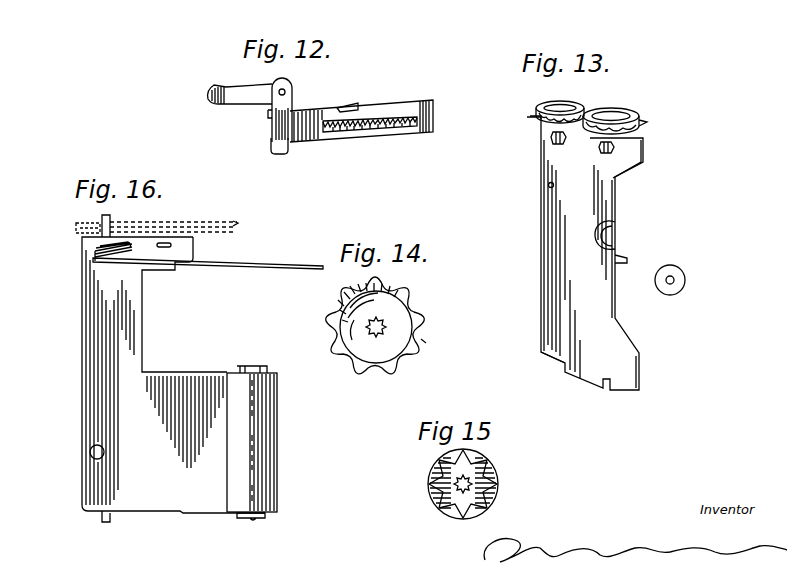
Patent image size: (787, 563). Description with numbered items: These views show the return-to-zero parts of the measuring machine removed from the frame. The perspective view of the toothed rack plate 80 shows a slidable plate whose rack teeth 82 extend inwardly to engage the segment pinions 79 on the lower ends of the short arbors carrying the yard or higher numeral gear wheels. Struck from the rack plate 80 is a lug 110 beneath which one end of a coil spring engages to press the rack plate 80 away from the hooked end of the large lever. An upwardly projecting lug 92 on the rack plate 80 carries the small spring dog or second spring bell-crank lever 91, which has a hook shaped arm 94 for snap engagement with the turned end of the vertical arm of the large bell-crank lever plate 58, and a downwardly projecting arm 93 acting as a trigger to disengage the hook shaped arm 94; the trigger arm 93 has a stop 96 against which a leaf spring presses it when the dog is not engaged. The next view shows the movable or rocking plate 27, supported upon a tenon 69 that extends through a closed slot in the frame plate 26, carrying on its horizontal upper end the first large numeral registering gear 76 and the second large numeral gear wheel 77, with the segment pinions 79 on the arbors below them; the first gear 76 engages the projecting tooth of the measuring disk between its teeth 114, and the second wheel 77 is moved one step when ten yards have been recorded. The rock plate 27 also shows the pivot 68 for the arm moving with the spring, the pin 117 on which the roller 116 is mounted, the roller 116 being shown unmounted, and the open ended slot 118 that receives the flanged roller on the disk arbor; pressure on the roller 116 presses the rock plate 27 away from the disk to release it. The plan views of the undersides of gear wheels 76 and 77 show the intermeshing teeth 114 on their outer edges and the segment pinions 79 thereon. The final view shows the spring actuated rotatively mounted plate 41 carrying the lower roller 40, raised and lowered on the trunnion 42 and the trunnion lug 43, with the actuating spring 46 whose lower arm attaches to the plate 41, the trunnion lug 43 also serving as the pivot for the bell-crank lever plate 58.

In FIG. 12, the toothed rack plate 80 is at (425, 134).
In FIG. 12, the rack teeth 82 is at (349, 133).
In FIG. 12, the lug 110 is at (347, 106).
In FIG. 12, the upwardly projecting lug 92 is at (292, 96).
In FIG. 12, the downwardly projecting arm 93 is at (273, 155).
In FIG. 12, the spring dog or second spring bell-crank lever 91 is at (233, 105).
In FIG. 12, the hook shaped arm 94 is at (210, 88).
In FIG. 12, the stop 96 is at (268, 116).
In FIG. 13, the movable or rocking plate 27 is at (541, 282).
In FIG. 13, the tenon 69 is at (565, 368).
In FIG. 13, the second large numeral gear wheel 77 is at (549, 102).
In FIG. 15, the second large numeral gear wheel 77 is at (492, 467).
In FIG. 13, the first large numeral registering gear 76 is at (634, 110).
In FIG. 14, the first large numeral registering gear 76 is at (398, 327).
In FIG. 13, the teeth 114 is at (646, 125).
In FIG. 14, the teeth 114 is at (418, 341).
In FIG. 13, the segment pinions 79 is at (591, 156).
In FIG. 14, the segment pinions 79 is at (380, 340).
In FIG. 15, the segment pinions 79 is at (474, 485).
In FIG. 13, the pivot 68 is at (547, 186).
In FIG. 13, the open ended slot 118 is at (612, 235).
In FIG. 13, the pin 117 is at (626, 260).
In FIG. 13, the roller 116 is at (684, 273).
In FIG. 16, the spring actuated rotatively mounted plate 41 is at (178, 515).
In FIG. 16, the trunnion 42 is at (113, 528).
In FIG. 16, the lower roller 40 is at (278, 448).
In FIG. 16, the trunnion lug 43 is at (102, 216).
In FIG. 16, the frame plate 26 is at (210, 222).
In FIG. 16, the bell-crank lever plate 58 is at (222, 232).
In FIG. 16, the actuating spring 46 is at (209, 269).